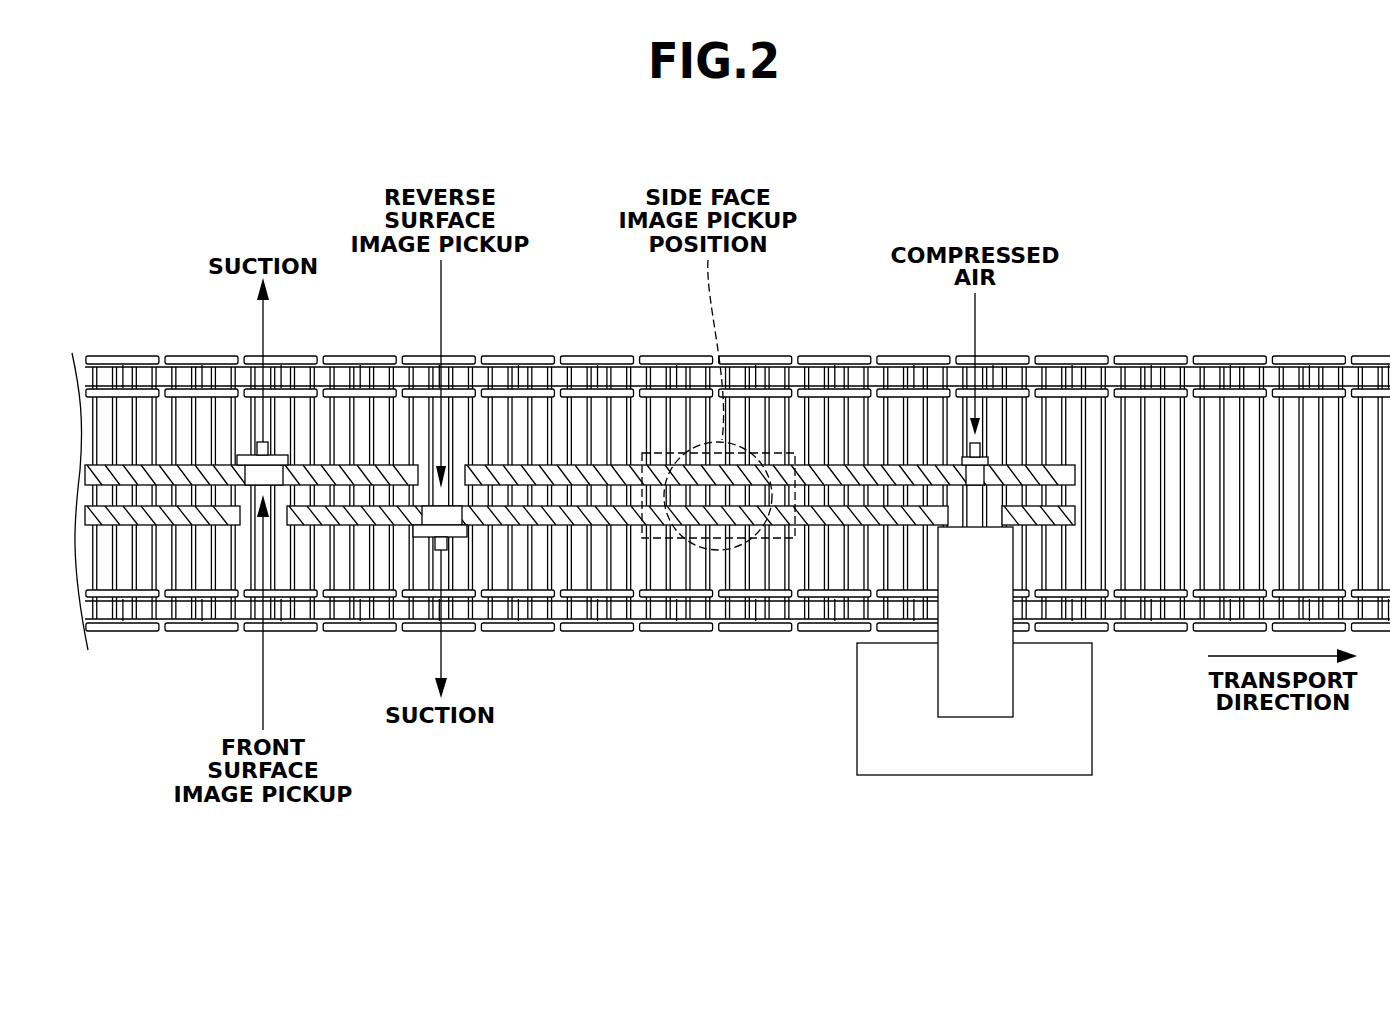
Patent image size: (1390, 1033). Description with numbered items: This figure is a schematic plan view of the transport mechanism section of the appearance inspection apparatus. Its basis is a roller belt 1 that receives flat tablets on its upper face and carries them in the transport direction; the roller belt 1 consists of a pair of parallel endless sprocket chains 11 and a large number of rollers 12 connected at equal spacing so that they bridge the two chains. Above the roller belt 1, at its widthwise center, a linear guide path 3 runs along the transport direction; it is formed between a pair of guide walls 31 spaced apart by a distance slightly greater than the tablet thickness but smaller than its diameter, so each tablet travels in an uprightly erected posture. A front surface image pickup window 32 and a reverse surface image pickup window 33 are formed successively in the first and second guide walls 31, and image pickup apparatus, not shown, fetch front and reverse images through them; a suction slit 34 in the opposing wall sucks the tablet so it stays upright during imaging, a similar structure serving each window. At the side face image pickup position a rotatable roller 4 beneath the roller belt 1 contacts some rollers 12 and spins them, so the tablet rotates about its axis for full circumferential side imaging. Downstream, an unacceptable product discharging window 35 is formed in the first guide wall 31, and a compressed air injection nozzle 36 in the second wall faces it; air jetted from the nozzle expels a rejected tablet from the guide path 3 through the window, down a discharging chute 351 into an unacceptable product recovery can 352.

The roller belt 1 is at (1276, 334).
The endless sprocket chains 11 is at (817, 362).
The rollers 12 is at (1173, 453).
The linear guide path 3 is at (518, 497).
The guide walls 31 is at (599, 478).
The front surface image pickup window 32 is at (249, 512).
The reverse surface image pickup window 33 is at (430, 466).
The suction slit 34 is at (252, 466).
The unacceptable product discharging window 35 is at (1000, 517).
The discharging chute 351 is at (1000, 675).
The unacceptable product recovery can 352 is at (978, 740).
The compressed air injection nozzle 36 is at (978, 480).
The rotatable roller 4 is at (803, 540).